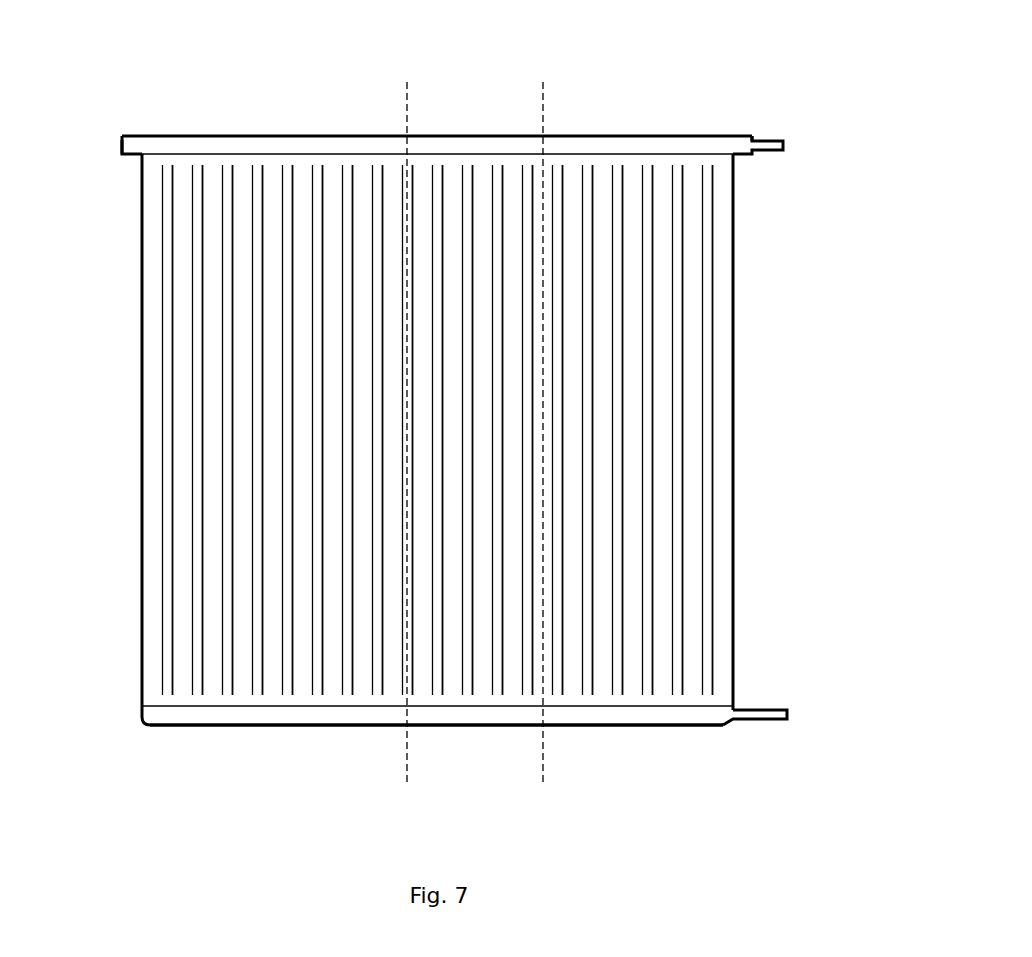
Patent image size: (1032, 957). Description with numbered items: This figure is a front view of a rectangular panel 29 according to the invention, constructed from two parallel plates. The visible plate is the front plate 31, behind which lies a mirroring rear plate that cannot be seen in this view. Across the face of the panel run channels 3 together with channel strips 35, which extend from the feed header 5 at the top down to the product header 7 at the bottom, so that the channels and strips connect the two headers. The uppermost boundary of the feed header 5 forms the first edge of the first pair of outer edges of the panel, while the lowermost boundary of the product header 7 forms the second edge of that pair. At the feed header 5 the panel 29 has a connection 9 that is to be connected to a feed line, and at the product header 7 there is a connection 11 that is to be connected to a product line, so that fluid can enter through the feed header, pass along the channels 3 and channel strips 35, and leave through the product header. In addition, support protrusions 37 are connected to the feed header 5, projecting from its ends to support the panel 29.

The panel 29 is at (630, 87).
The feed header 5 is at (165, 145).
The support protrusions 37 is at (131, 147).
The connection 9 is at (772, 155).
The channels 3 is at (152, 347).
The channel strips 35 is at (165, 430).
The front plate 31 is at (453, 430).
The product header 7 is at (317, 715).
The connection 11 is at (780, 712).